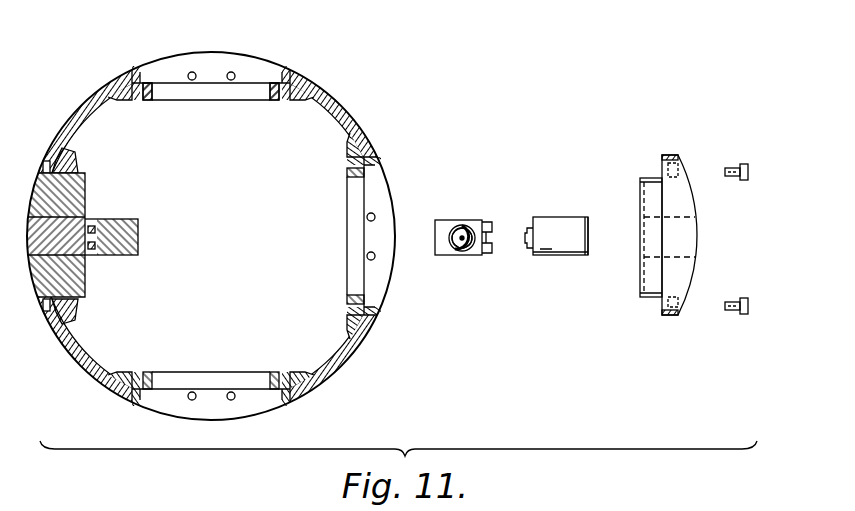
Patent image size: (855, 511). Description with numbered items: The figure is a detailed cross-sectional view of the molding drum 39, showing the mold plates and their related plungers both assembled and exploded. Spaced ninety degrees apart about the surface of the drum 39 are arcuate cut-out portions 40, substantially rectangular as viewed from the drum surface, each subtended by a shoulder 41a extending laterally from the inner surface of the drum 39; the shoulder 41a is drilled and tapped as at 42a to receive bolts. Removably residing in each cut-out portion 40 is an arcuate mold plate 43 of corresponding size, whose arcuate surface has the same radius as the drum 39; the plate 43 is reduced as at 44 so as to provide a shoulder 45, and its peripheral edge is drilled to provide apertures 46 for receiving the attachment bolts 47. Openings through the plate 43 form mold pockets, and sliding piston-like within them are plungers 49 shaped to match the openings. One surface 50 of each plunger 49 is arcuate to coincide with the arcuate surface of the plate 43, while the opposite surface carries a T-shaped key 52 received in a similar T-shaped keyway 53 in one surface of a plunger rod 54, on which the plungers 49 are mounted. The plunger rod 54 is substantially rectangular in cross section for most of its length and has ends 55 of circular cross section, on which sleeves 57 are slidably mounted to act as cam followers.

The molding drum 39 is at (346, 113).
The arcuate cut-out portion 40 is at (260, 74).
The shoulder 41a is at (135, 101).
The tapped hole 42a is at (282, 102).
The arcuate mold plate 43 is at (683, 286).
The reduced portion 44 is at (651, 298).
The shoulder 45 is at (663, 170).
The aperture 46 is at (673, 166).
The attachment bolt 47 is at (748, 162).
The plunger 49 is at (27, 226).
The arcuate surface 50 is at (590, 238).
The T-shaped key 52 is at (95, 230).
The T-shaped keyway 53 is at (488, 241).
The plunger rod 54 is at (124, 254).
The end 55 is at (458, 250).
The sleeve 57 is at (452, 240).